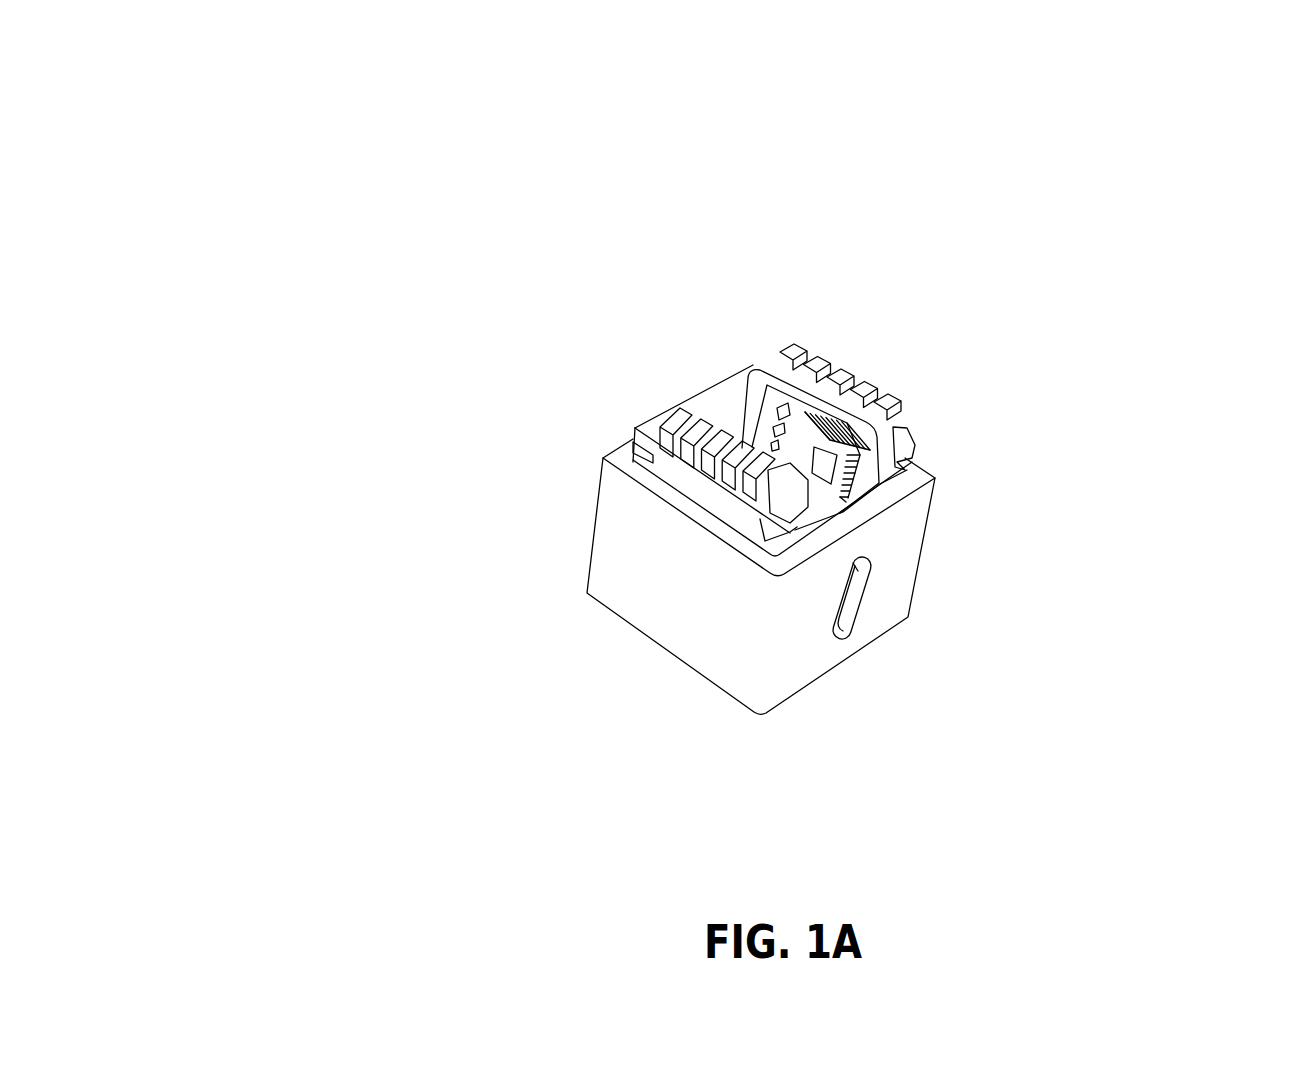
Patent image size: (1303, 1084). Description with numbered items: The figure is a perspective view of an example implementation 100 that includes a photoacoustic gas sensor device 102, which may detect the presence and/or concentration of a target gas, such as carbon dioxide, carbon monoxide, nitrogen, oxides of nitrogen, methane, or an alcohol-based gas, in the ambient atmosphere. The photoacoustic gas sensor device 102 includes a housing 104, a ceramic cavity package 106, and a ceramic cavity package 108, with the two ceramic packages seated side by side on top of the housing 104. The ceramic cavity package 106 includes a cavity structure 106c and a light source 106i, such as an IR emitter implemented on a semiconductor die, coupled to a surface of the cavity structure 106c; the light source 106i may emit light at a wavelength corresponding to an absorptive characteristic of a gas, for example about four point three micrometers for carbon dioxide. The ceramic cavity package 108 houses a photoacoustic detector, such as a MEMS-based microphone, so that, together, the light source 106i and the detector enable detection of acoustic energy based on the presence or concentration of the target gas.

The example implementation 100 is at (250, 61).
The photoacoustic gas sensor device 102 is at (874, 335).
The housing 104 is at (597, 528).
The ceramic cavity package 106 is at (778, 358).
The cavity structure 106c is at (832, 490).
The light source 106i is at (838, 470).
The ceramic cavity package 108 is at (653, 425).